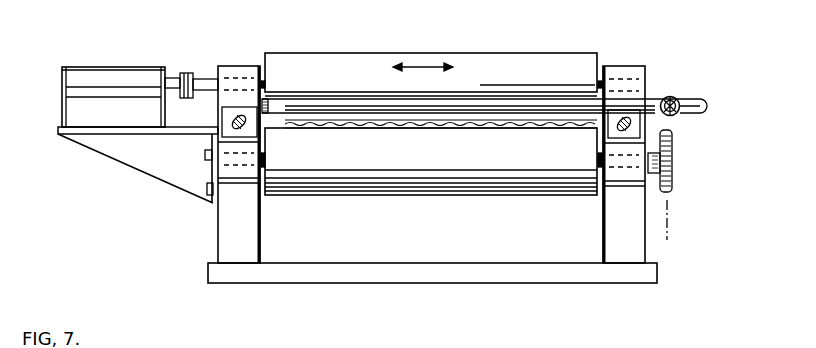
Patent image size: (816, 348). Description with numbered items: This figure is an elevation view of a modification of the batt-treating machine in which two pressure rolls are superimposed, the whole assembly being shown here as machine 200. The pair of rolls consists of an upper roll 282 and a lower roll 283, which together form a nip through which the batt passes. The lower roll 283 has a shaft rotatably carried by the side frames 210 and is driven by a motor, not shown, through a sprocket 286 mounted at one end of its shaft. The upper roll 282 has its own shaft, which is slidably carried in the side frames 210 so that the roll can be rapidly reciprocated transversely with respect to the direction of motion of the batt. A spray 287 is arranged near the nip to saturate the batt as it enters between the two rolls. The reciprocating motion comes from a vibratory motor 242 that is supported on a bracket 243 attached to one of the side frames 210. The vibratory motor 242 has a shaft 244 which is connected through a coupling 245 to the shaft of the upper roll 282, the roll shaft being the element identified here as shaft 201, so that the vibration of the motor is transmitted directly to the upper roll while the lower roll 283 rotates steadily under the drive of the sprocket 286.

The base 200 is at (425, 263).
The side frames 210 is at (248, 239).
The upper roll 282 is at (545, 62).
The lower roll 283 is at (377, 192).
The spray 287 is at (323, 108).
The sprocket 286 is at (673, 163).
The vibratory motor 242 is at (79, 68).
The shaft 244 is at (172, 78).
The coupling 245 is at (188, 73).
The shaft 201 is at (206, 79).
The bracket 243 is at (155, 172).